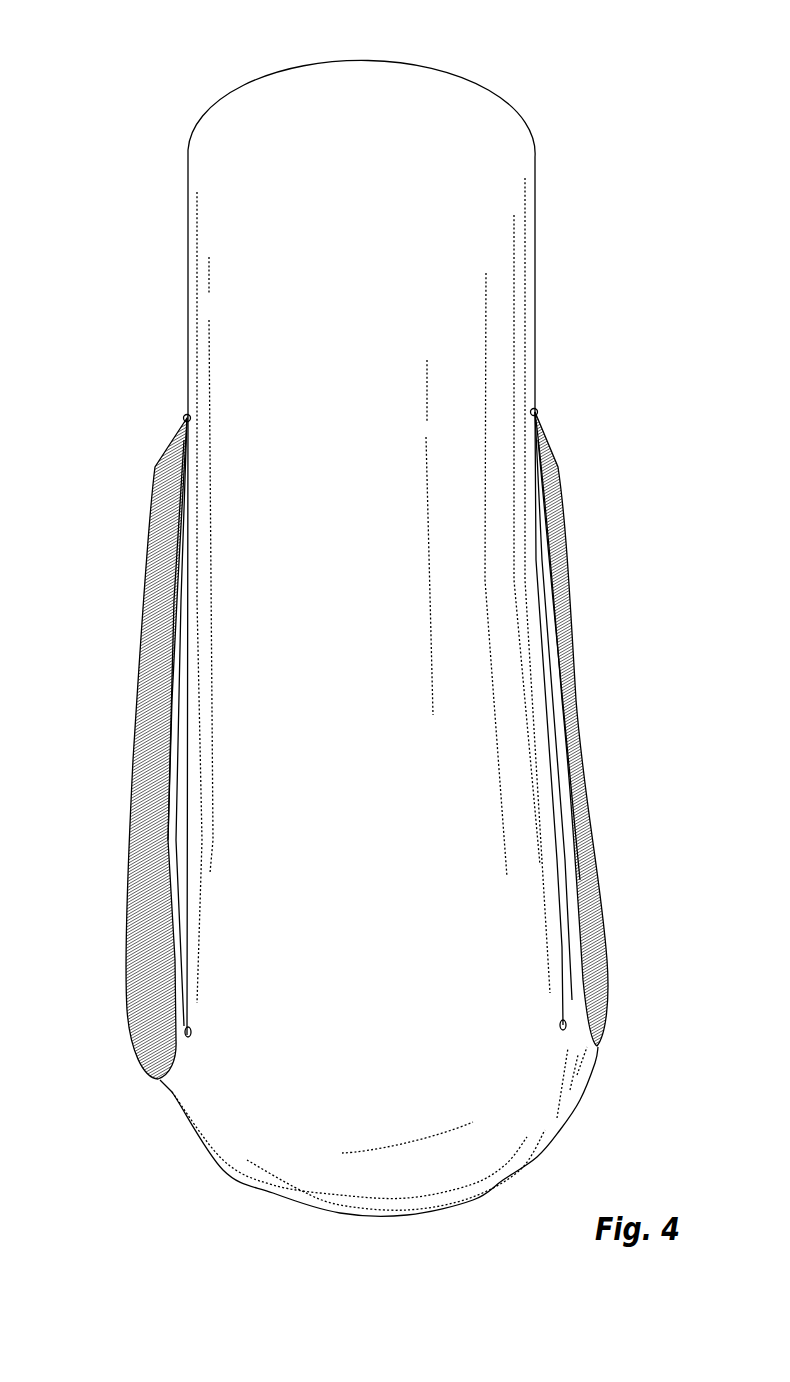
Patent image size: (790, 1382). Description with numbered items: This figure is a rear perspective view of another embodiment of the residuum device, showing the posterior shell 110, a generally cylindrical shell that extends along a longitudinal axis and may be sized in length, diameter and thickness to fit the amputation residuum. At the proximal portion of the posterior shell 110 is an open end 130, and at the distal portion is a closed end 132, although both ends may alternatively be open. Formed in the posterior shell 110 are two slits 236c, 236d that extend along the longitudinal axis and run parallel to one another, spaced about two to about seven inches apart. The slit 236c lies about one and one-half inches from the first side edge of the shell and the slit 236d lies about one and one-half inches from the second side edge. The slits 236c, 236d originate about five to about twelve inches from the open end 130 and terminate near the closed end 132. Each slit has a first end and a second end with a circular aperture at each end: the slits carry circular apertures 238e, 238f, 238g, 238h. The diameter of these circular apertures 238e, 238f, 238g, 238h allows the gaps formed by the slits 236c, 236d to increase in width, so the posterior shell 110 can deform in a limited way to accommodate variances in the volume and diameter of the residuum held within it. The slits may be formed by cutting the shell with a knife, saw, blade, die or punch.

The posterior shell 110 is at (523, 162).
The open end 130 is at (324, 54).
The closed end 132 is at (272, 1180).
The slit 236c is at (562, 947).
The slit 236d is at (183, 873).
The circular aperture 238e is at (541, 406).
The circular aperture 238f is at (557, 1019).
The circular aperture 238g is at (181, 411).
The circular aperture 238h is at (195, 1024).